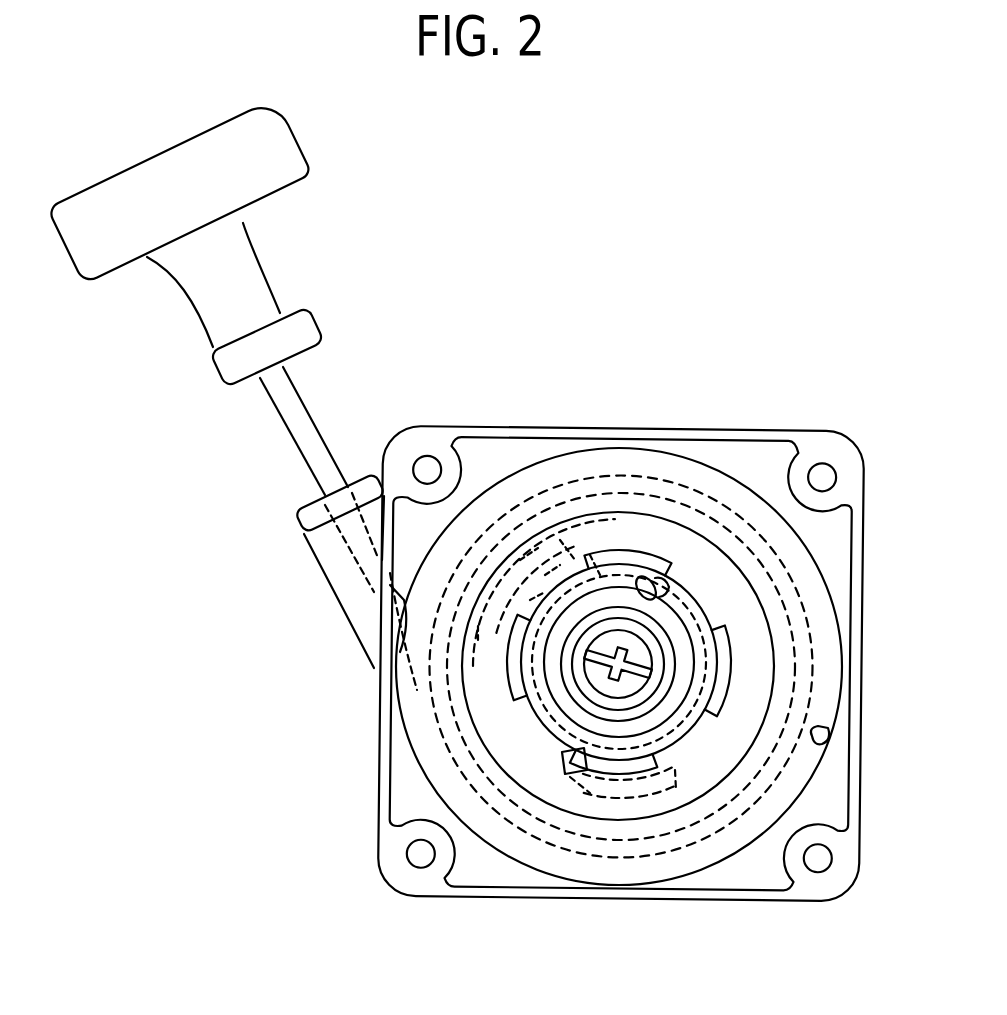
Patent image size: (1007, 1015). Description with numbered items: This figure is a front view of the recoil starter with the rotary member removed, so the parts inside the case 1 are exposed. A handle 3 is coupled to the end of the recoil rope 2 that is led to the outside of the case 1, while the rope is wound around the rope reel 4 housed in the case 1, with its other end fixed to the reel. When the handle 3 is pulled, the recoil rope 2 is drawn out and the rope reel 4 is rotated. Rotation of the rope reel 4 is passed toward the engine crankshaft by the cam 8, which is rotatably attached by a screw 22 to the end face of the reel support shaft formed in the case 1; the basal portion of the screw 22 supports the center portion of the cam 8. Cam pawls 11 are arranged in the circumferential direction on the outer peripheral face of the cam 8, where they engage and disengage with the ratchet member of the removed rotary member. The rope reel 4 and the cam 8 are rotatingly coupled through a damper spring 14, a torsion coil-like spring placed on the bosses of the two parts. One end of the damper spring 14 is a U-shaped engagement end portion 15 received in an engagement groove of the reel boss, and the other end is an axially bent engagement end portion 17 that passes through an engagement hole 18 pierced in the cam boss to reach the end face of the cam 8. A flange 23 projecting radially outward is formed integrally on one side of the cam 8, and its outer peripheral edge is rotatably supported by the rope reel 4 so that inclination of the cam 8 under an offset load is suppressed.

The case 1 is at (379, 805).
The recoil rope 2 is at (300, 447).
The handle 3 is at (126, 265).
The rope reel 4 is at (740, 847).
The cam 8 is at (560, 735).
The cam pawls 11 is at (653, 553).
The damper spring 14 is at (687, 613).
The engagement end portion 15 is at (652, 783).
The engagement end portion 17 is at (658, 592).
The engagement hole 18 is at (645, 580).
The screw 22 is at (650, 686).
The flange 23 is at (793, 702).